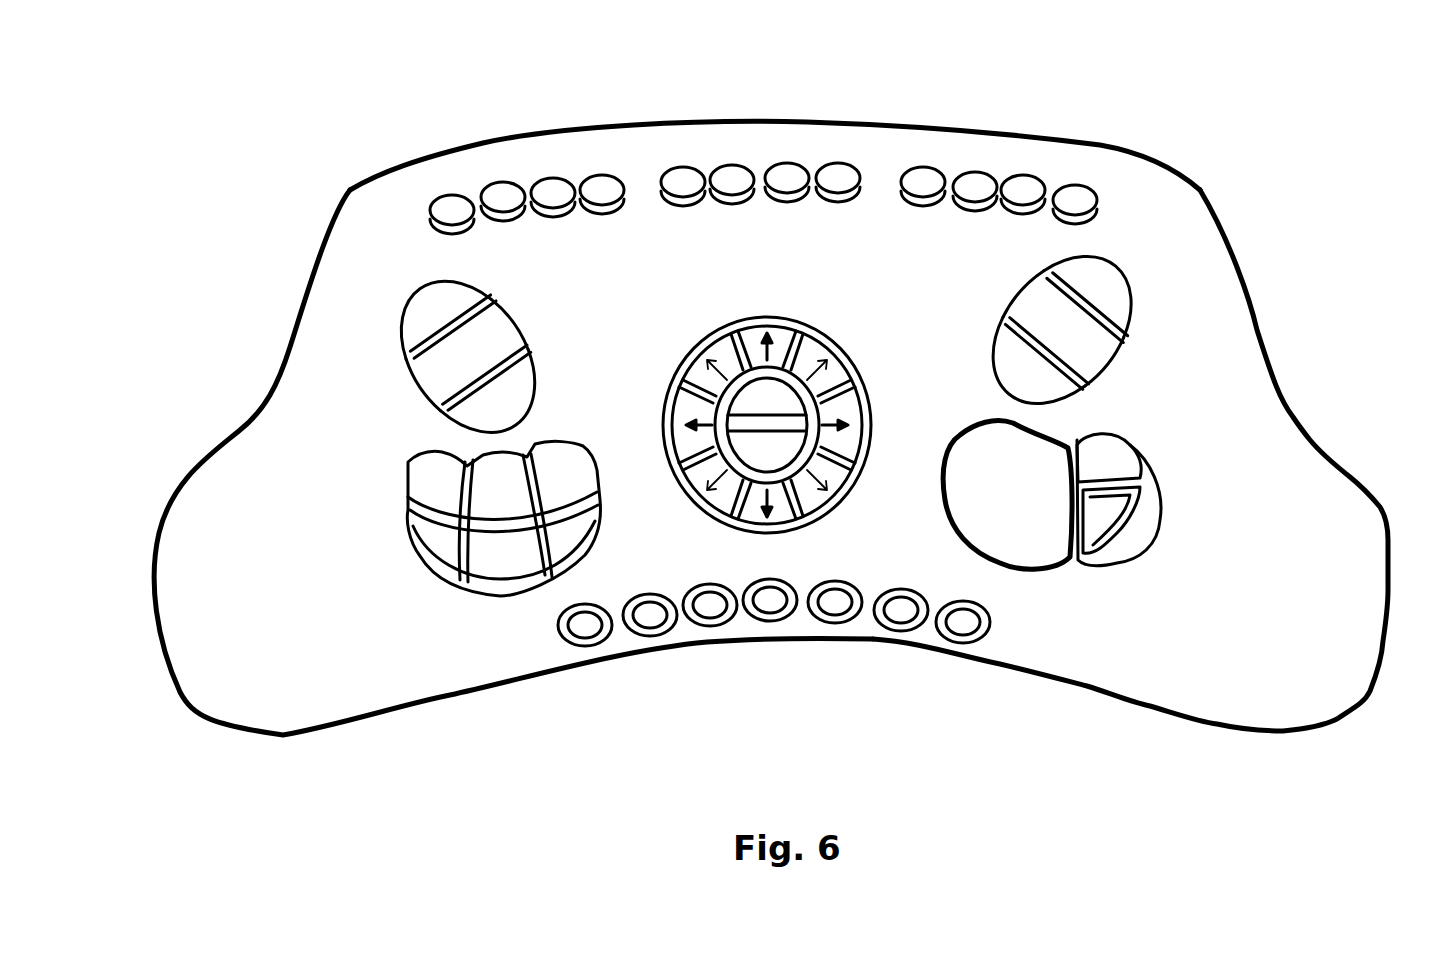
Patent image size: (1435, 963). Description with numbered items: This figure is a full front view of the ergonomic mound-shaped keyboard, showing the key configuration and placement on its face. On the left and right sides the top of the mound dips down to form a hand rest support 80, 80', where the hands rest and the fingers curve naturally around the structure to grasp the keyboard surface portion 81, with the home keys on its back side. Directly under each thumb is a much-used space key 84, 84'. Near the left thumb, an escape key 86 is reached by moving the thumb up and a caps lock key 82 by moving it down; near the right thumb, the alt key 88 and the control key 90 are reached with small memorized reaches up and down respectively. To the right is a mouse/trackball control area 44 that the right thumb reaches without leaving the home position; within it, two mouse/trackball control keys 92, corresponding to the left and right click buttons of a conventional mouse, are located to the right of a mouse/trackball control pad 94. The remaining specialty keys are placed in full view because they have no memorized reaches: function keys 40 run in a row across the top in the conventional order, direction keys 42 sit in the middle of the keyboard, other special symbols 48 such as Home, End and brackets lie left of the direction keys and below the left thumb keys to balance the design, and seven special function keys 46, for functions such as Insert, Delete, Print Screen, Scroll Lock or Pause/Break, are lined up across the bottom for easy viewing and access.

The function keys 40 is at (493, 190).
The direction keys 42 is at (692, 325).
The mouse/trackball control area 44 is at (1030, 585).
The special function keys 46 is at (737, 630).
The special symbols 48 is at (437, 603).
The hand rest support 80 is at (513, 462).
The hand rest support 80' is at (1145, 460).
The keyboard surface portion 81 is at (1107, 143).
The caps lock key 82 is at (470, 418).
The space key 84 is at (378, 326).
The space key 84' is at (1158, 303).
The escape key 86 is at (412, 322).
The alt key 88 is at (1133, 307).
The control key 90 is at (1085, 397).
The mouse/trackball control keys 92 is at (1105, 518).
The mouse/trackball control pad 94 is at (1058, 540).